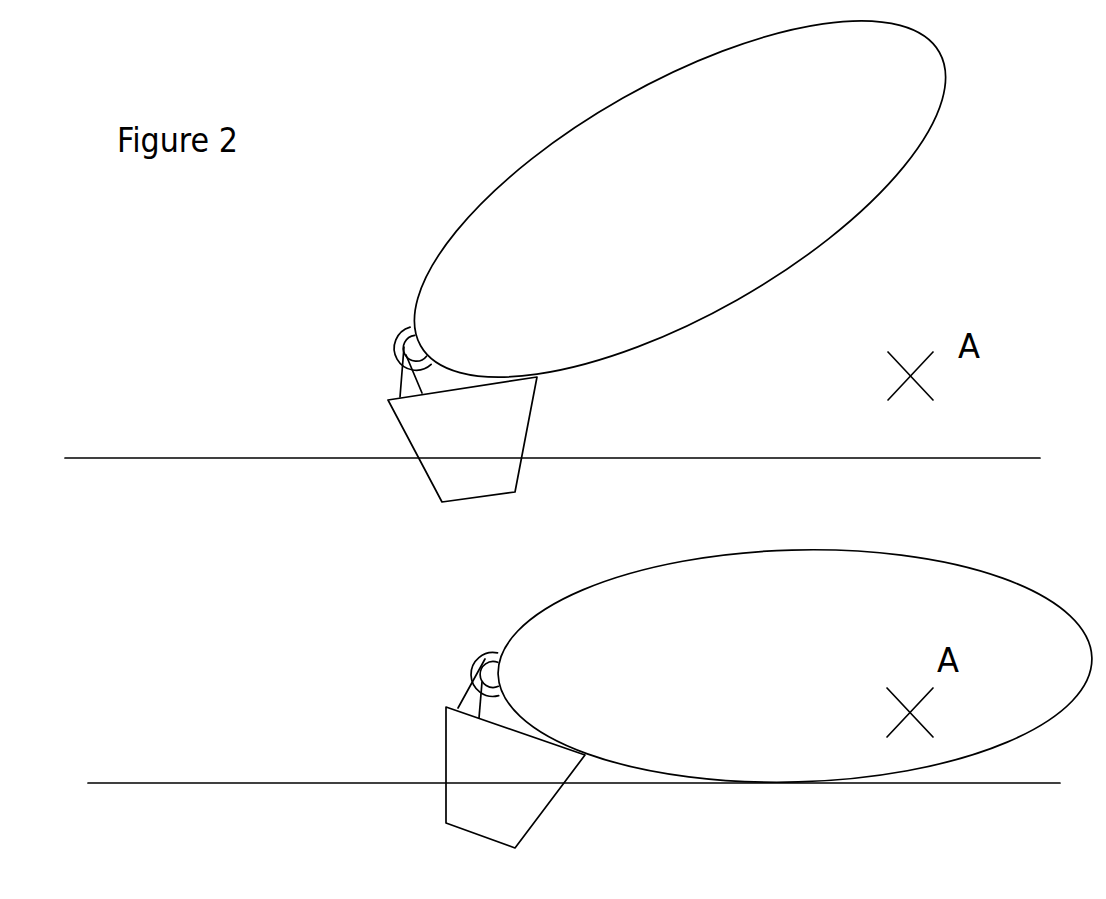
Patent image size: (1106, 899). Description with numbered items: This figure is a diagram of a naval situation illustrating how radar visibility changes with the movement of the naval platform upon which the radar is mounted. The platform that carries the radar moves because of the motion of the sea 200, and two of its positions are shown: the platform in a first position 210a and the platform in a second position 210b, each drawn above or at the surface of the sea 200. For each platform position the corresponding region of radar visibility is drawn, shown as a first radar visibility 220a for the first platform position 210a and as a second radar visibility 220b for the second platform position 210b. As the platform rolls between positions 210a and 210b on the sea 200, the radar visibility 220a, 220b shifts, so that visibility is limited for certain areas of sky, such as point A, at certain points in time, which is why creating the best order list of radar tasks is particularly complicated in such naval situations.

The sea 200 is at (177, 783).
The platform 210a is at (422, 438).
The platform 210b is at (455, 727).
The radar visibility 220a is at (730, 282).
The radar visibility 220b is at (717, 608).